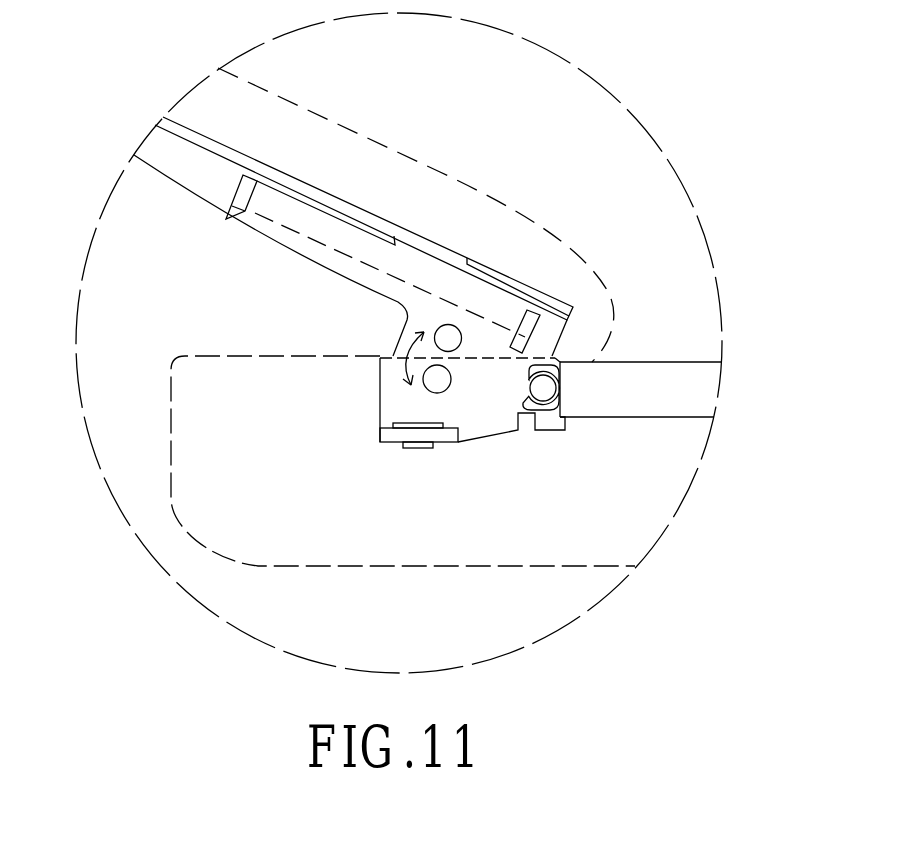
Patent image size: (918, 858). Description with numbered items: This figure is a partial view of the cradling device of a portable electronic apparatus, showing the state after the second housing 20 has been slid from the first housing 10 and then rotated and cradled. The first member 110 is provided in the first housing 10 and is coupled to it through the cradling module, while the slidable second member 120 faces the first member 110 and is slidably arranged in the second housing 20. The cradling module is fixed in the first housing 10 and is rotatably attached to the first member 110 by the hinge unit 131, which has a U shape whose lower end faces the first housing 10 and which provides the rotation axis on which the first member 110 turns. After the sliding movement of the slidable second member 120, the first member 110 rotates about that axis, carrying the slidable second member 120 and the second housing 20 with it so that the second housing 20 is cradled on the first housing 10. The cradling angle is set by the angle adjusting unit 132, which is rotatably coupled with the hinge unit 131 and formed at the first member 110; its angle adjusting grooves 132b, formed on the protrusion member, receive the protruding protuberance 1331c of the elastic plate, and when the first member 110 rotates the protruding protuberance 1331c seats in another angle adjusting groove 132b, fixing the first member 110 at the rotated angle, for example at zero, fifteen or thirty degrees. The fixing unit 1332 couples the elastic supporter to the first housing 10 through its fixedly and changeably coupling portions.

The first housing 10 is at (657, 492).
The second housing 20 is at (363, 167).
The first member 110 is at (668, 372).
The slidable second member 120 is at (253, 222).
The hinge unit 131 is at (548, 395).
The angle adjusting unit 132 is at (398, 331).
The angle adjusting groove 132b is at (460, 340).
The protruding protuberance 1331c is at (438, 383).
The fixing unit 1332 is at (398, 437).